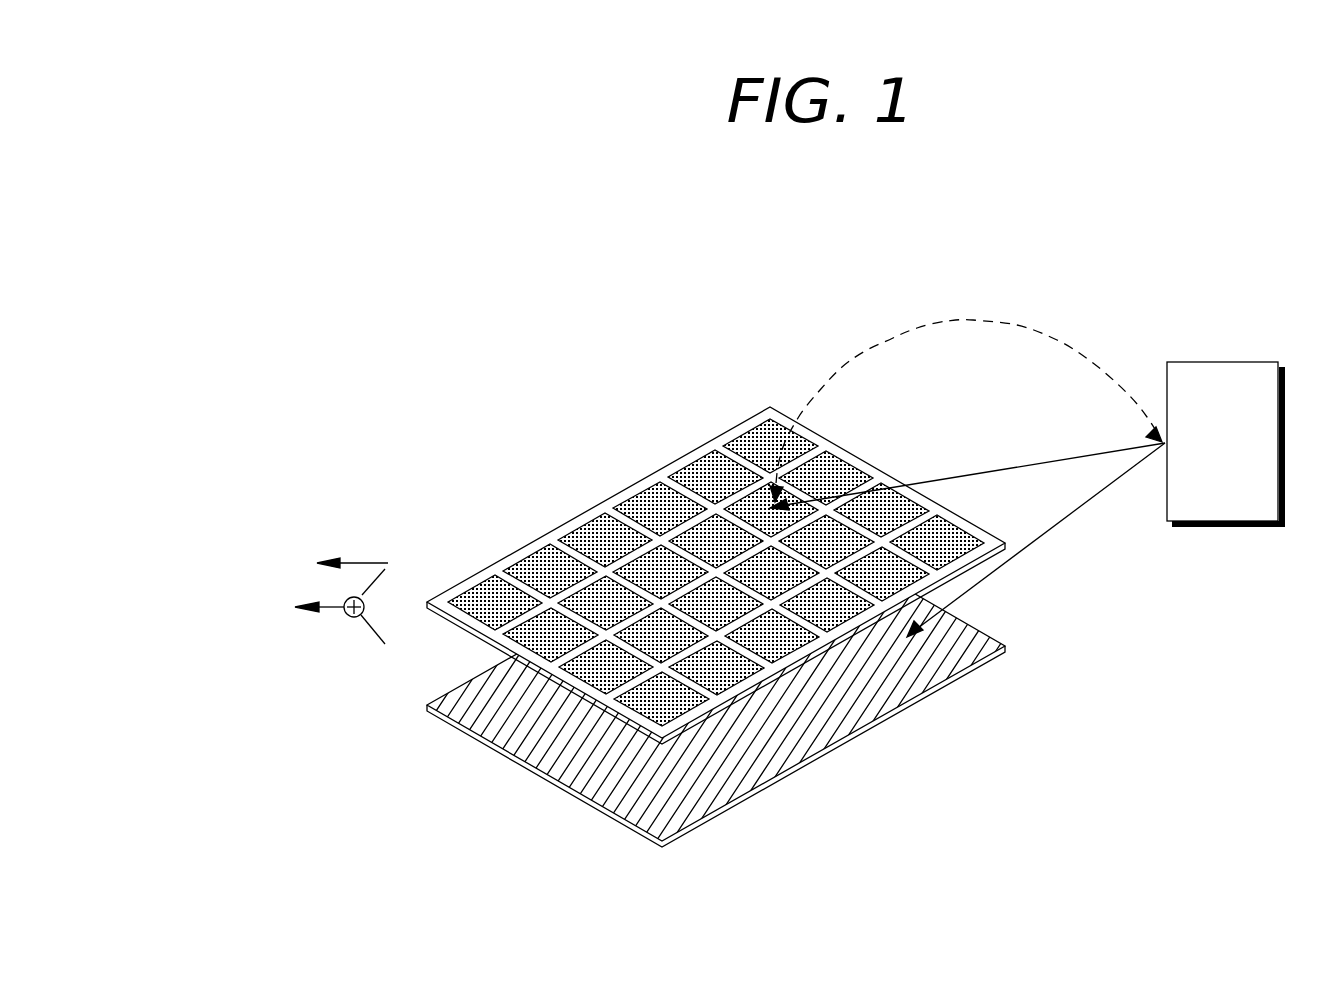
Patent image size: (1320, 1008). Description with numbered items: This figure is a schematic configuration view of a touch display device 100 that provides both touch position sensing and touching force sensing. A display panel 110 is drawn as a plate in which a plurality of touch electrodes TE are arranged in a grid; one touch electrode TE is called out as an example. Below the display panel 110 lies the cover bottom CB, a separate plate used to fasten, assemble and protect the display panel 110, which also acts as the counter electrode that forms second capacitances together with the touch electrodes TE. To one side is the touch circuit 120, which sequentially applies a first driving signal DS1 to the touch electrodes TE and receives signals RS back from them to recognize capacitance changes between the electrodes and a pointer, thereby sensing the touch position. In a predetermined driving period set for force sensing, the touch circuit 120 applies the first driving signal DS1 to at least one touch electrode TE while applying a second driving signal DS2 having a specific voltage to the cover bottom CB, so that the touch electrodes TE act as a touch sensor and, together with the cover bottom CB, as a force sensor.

The touch display device 100 is at (392, 293).
The display panel 110 is at (699, 551).
The touch circuit 120 is at (1207, 453).
The touch electrode TE is at (488, 600).
The cover bottom CB is at (460, 694).
The signal received from the touch electrodes RS is at (966, 396).
The first driving signal DS1 is at (967, 474).
The second driving signal DS2 is at (1036, 540).